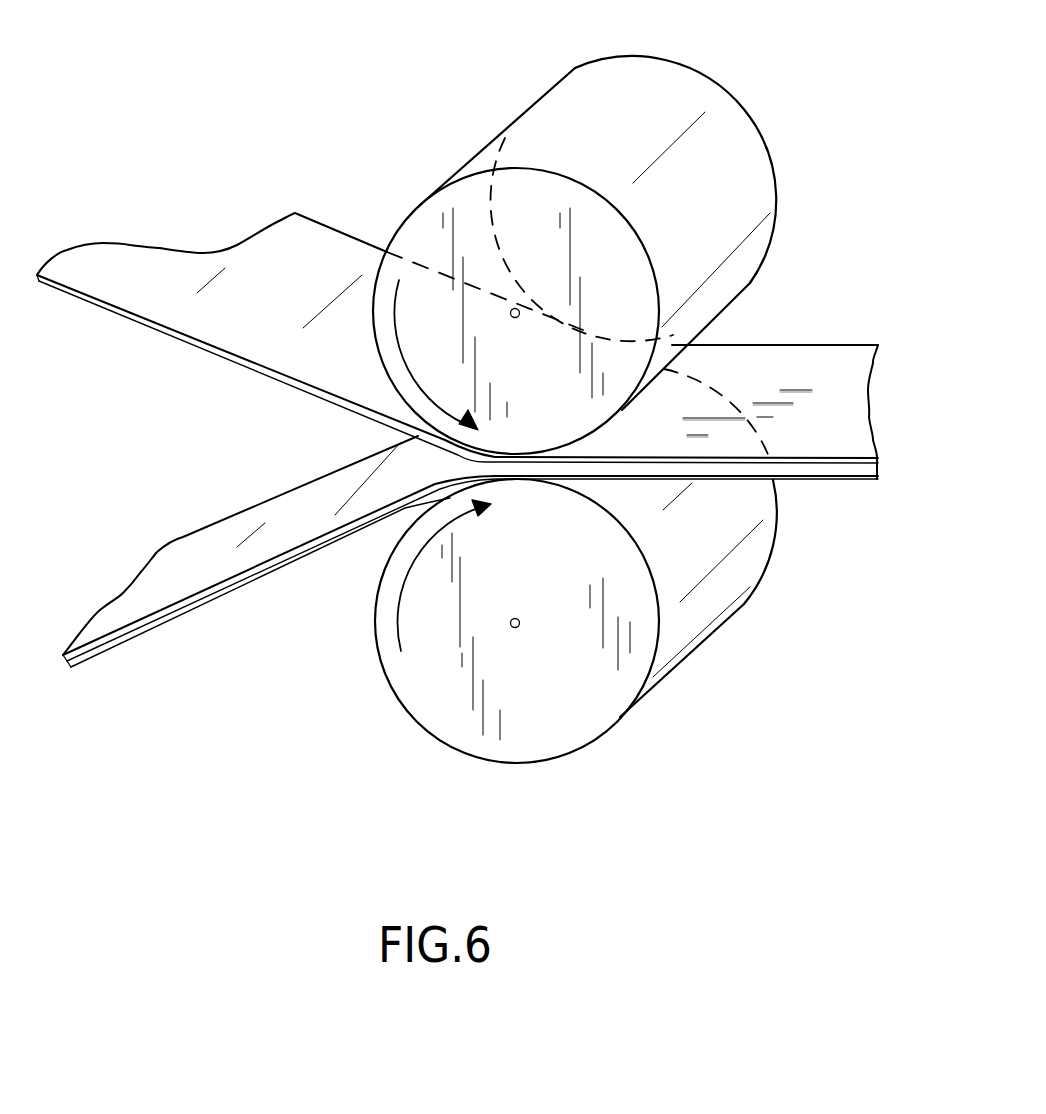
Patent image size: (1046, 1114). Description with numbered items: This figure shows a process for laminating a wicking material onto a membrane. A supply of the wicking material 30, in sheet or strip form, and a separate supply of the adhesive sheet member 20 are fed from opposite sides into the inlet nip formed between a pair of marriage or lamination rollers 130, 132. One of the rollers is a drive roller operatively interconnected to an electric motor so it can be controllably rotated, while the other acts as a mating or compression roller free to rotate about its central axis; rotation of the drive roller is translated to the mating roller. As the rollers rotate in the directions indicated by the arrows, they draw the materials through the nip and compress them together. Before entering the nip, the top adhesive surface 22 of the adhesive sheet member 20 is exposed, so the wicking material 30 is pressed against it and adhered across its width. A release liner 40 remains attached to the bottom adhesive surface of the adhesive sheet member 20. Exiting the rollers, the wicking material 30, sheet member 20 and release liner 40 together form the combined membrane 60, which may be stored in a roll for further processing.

The adhesive sheet member 20 is at (122, 635).
The top adhesive surface 22 is at (275, 547).
The wicking material 30 is at (147, 318).
The release liner 40 is at (153, 628).
The combined membrane 60 is at (812, 357).
The lamination roller 130 is at (548, 385).
The lamination roller 132 is at (548, 582).